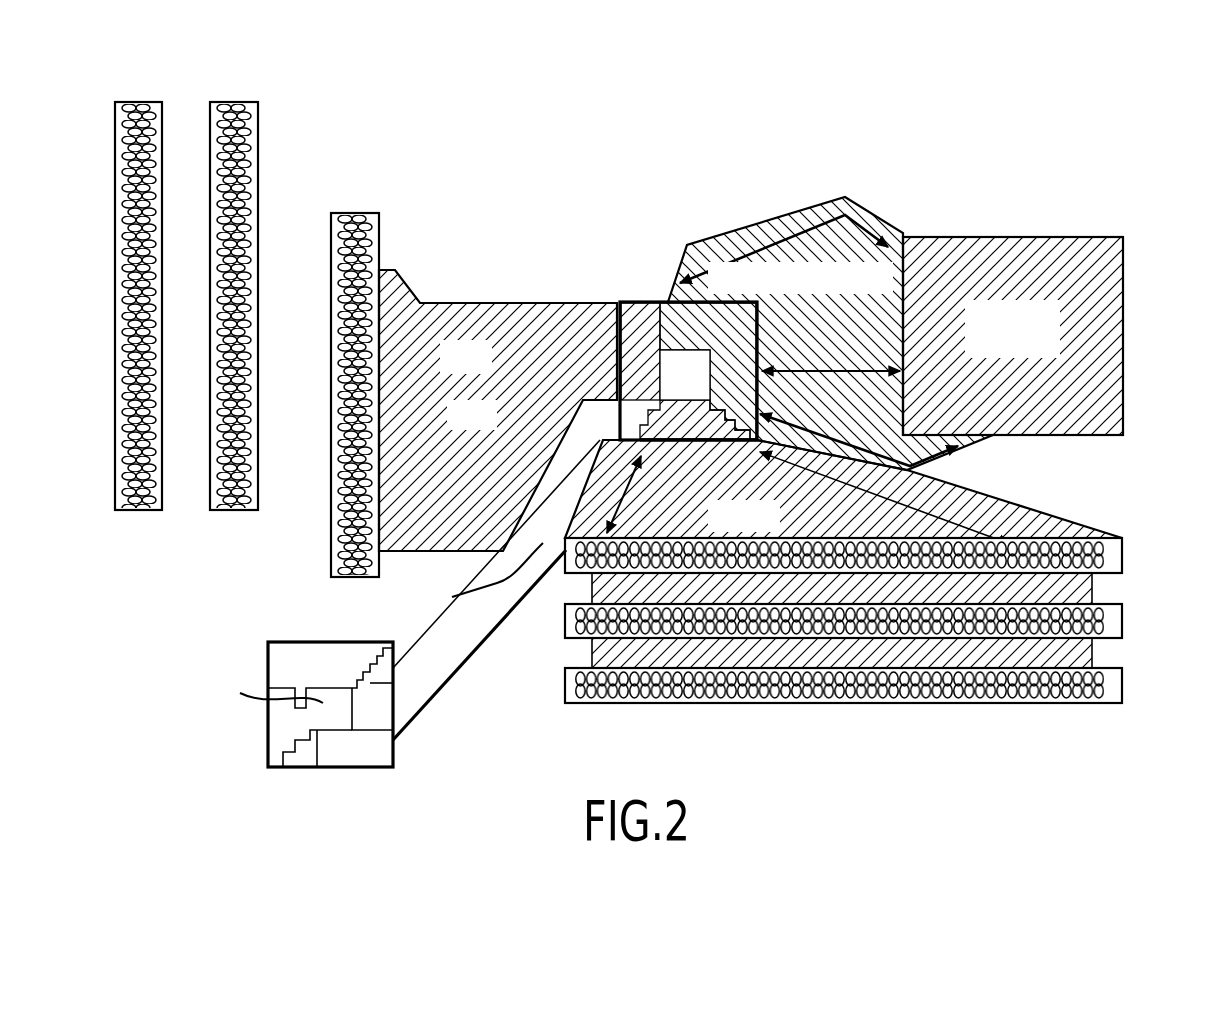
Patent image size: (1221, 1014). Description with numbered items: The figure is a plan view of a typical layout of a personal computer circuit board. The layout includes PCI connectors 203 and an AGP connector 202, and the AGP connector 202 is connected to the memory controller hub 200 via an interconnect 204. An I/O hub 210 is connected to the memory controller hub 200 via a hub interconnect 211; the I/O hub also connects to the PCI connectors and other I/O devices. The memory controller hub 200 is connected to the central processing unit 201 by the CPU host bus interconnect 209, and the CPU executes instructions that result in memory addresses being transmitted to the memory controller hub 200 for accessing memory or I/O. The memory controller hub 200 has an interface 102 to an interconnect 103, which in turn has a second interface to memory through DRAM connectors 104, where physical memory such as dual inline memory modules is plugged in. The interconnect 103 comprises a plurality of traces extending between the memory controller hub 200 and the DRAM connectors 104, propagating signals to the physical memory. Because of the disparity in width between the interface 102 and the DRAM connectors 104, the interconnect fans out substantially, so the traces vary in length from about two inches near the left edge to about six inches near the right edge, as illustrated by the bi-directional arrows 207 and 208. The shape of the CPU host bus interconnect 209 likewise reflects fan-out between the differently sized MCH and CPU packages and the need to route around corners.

The interface 102 is at (672, 444).
The interconnect 103 is at (845, 533).
The DRAM connectors 104 is at (1125, 553).
The memory controller hub 200 is at (632, 302).
The central processing unit 201 is at (1033, 237).
The AGP connector 202 is at (353, 213).
The PCI connectors 203 is at (138, 102).
The interconnect 204 is at (487, 372).
The bi-directional arrow 207 is at (625, 498).
The bi-directional arrow 208 is at (903, 500).
The CPU host bus interconnect 209 is at (845, 346).
The I/O hub 210 is at (305, 767).
The hub interconnect 211 is at (458, 644).